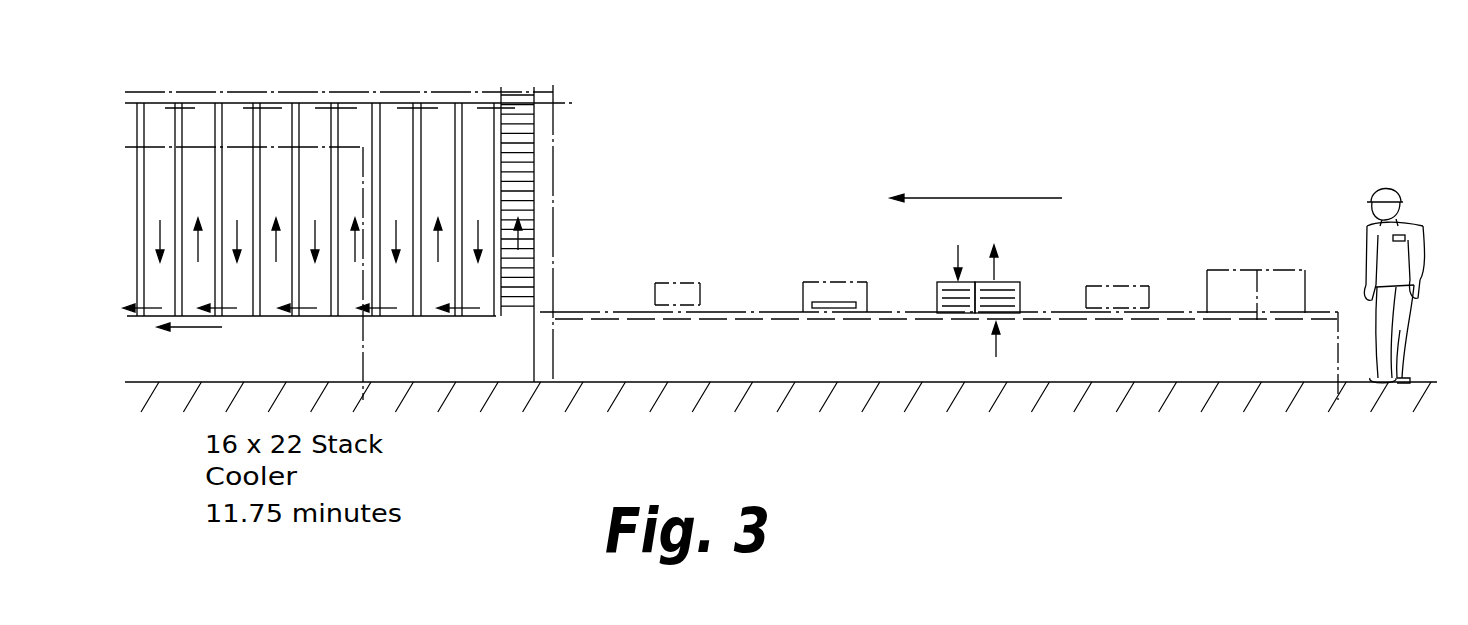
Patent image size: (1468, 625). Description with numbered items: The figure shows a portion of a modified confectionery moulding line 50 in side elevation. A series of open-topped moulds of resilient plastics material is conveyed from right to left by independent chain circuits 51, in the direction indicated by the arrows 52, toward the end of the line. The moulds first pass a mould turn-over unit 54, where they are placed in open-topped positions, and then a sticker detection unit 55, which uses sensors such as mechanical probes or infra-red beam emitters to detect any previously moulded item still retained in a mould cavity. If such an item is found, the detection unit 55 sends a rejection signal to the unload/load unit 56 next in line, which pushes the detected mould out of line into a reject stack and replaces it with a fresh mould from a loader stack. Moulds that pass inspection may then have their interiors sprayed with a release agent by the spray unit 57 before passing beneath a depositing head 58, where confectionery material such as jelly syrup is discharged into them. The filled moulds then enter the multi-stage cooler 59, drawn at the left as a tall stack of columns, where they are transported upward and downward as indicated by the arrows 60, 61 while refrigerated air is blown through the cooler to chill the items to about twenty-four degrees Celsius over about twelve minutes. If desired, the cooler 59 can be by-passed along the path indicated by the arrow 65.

The modified line 50 is at (939, 248).
The independent chain circuits 51 is at (1192, 303).
The arrows 52 is at (950, 198).
The mould turn-over unit 54 is at (1289, 257).
The sticker detection unit 55 is at (1123, 273).
The unload/load unit 56 is at (1018, 269).
The spray unit 57 is at (852, 270).
The depositing head 58 is at (699, 272).
The multi-stage cooler 59 is at (565, 130).
The arrows 60 is at (437, 245).
The arrows 61 is at (398, 238).
The arrow 65 is at (188, 328).